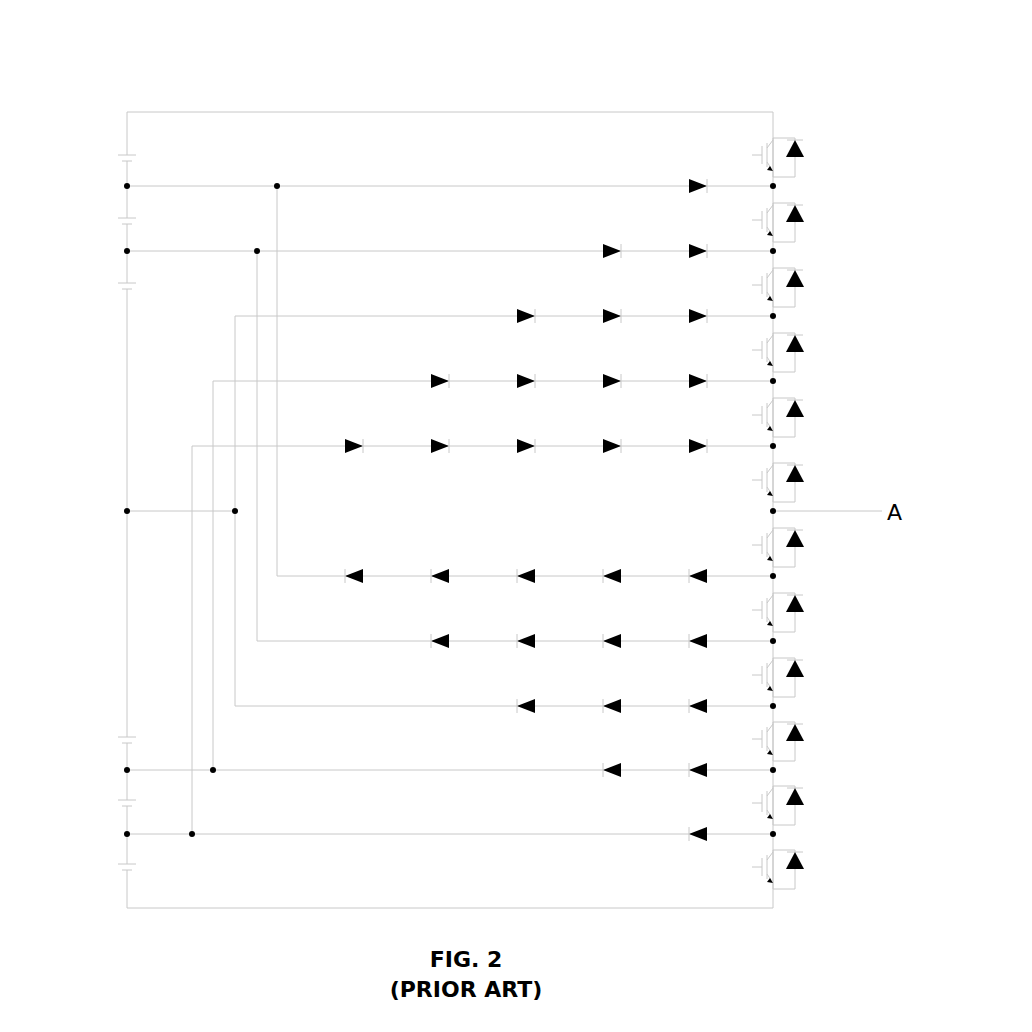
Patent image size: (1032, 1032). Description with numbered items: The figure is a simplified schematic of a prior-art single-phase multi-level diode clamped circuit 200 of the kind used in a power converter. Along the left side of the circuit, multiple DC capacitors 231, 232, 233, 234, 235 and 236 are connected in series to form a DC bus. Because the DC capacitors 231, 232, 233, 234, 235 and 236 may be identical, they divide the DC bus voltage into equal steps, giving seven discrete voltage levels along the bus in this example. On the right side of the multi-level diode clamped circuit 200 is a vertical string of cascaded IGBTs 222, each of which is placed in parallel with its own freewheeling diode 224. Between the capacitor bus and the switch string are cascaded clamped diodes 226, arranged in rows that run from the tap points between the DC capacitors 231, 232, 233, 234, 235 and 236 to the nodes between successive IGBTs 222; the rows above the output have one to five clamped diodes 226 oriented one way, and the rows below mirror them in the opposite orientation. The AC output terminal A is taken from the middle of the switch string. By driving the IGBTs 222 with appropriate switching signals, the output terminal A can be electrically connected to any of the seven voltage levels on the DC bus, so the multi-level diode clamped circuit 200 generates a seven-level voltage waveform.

The multi-level diode clamped circuit 200 is at (450, 67).
The IGBT 222 is at (756, 158).
The freewheeling diode 224 is at (804, 161).
The clamped diode 226 is at (497, 523).
The DC capacitor 231 is at (121, 154).
The DC capacitor 232 is at (121, 217).
The DC capacitor 233 is at (121, 282).
The DC capacitor 234 is at (121, 736).
The DC capacitor 235 is at (121, 799).
The DC capacitor 236 is at (121, 863).